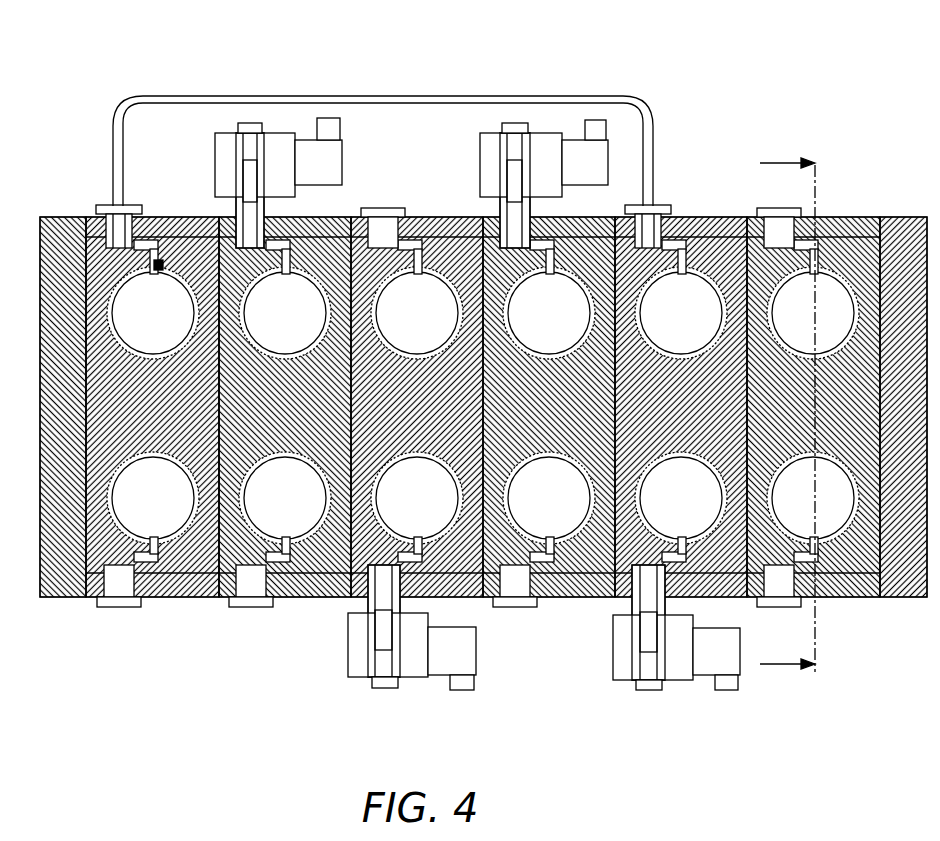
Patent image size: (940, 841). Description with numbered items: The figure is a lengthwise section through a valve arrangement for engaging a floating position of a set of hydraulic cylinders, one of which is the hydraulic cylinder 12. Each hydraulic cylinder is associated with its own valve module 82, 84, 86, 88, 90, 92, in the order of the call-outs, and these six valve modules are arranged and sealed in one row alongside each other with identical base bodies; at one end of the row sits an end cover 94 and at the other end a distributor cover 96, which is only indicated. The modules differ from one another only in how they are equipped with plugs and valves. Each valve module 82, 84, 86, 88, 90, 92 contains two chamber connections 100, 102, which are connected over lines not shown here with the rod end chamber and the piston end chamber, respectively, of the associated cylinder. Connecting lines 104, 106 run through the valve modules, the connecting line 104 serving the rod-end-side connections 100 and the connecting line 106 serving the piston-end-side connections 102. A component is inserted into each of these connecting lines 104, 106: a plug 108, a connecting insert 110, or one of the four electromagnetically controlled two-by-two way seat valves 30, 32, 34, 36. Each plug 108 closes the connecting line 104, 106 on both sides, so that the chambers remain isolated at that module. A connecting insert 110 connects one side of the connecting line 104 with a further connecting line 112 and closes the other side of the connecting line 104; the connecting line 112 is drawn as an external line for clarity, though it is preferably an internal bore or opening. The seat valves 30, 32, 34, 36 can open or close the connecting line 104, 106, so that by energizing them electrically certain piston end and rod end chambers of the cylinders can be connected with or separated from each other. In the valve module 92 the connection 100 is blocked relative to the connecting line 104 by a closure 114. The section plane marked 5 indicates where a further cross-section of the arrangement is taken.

The hydraulic cylinder 12 is at (490, 407).
The seat valve 30 is at (412, 668).
The seat valve 32 is at (550, 162).
The seat valve 34 is at (283, 162).
The seat valve 36 is at (680, 668).
The section line 5- 5 is at (787, 404).
The valve module 82 is at (432, 600).
The valve module 84 is at (543, 600).
The valve module 86 is at (822, 600).
The valve module 88 is at (698, 600).
The valve module 90 is at (290, 600).
The valve module 92 is at (160, 598).
The end cover 94 is at (62, 598).
The distributor cover 96 is at (907, 600).
The chamber connection 100 is at (832, 326).
The chamber connection 102 is at (832, 511).
The connecting line 104 is at (195, 242).
The connecting line 106 is at (203, 578).
The plug 108 is at (385, 215).
The connecting insert 110 is at (105, 207).
The connecting line 112 is at (328, 97).
The closure 114 is at (160, 260).